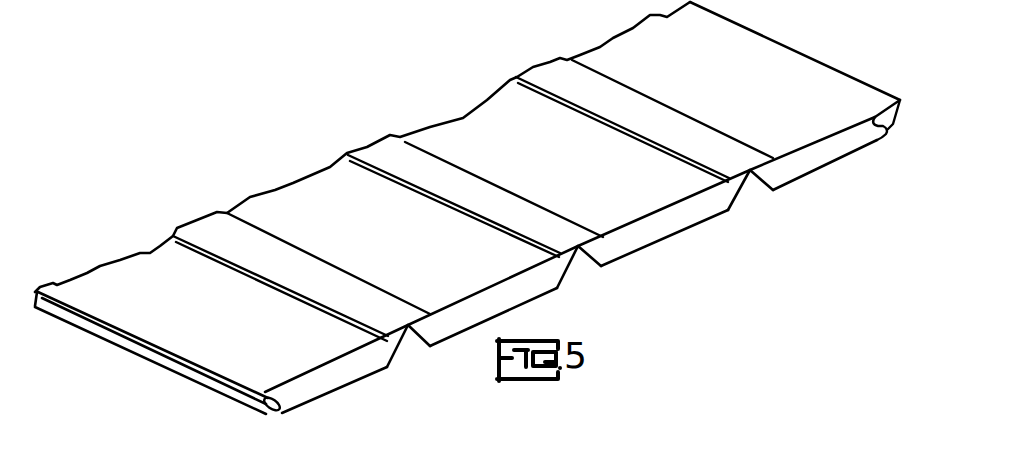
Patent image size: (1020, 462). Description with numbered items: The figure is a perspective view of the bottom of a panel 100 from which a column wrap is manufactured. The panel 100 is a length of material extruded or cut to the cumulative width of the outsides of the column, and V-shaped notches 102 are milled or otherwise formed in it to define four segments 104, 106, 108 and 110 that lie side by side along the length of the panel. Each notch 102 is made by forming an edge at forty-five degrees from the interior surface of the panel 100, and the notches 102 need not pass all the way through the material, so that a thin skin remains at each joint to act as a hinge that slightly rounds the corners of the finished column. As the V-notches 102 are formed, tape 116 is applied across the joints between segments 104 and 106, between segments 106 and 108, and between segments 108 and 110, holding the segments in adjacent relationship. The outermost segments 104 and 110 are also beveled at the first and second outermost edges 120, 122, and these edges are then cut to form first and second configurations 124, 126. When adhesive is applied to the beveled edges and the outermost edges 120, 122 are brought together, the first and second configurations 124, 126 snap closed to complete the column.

The panel 100 is at (122, 242).
The V-shaped notches 102 is at (405, 338).
The segment 104 is at (232, 328).
The segment 106 is at (409, 250).
The segment 108 is at (589, 174).
The segment 110 is at (750, 92).
The tape 116 is at (224, 241).
The first outermost edge 120 is at (145, 361).
The second outermost edge 122 is at (893, 126).
The first configuration 124 is at (264, 411).
The second configuration 126 is at (882, 111).